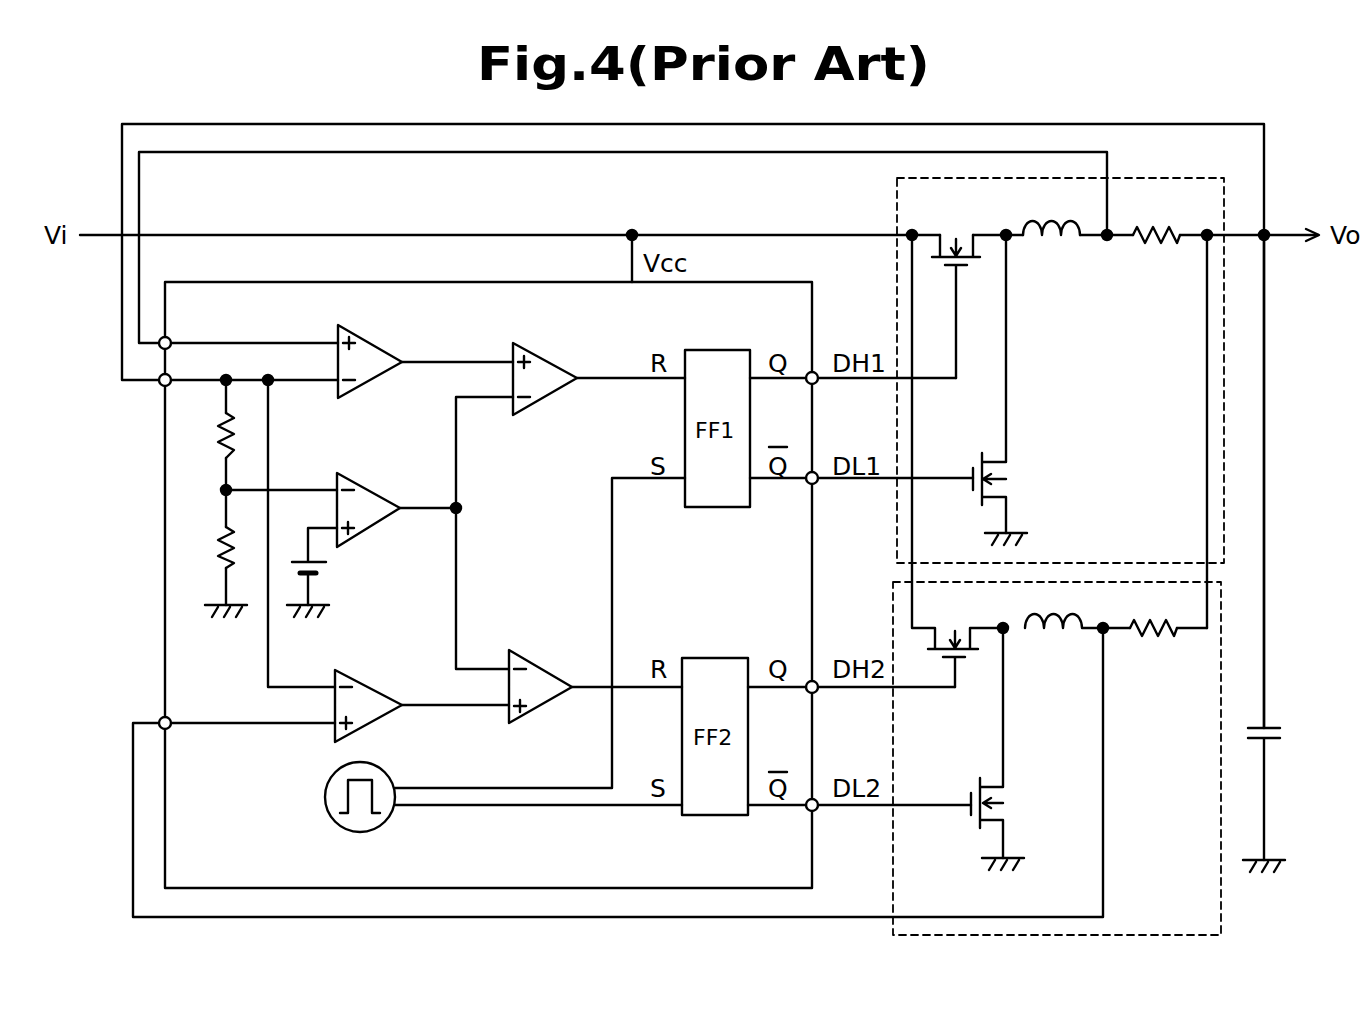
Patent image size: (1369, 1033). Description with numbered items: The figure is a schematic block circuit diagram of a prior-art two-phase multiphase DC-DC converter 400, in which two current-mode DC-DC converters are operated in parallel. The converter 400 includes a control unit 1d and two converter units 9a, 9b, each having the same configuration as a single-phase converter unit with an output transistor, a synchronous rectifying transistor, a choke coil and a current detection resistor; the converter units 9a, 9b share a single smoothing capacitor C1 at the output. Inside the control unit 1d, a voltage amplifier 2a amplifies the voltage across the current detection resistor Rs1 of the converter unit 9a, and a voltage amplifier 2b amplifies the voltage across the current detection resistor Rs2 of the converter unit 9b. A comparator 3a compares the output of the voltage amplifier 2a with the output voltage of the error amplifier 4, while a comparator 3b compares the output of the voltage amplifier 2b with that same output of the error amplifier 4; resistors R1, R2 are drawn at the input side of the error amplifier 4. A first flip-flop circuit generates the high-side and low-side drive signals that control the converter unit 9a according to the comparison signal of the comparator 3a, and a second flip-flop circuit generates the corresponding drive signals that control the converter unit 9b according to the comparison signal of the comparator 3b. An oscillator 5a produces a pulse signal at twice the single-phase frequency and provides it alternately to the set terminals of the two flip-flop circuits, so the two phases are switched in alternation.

The two-phase multiphase DC-DC converter 400 is at (1280, 105).
The control unit 1d is at (812, 858).
The voltage amplifier 2a is at (380, 346).
The voltage amplifier 2b is at (377, 691).
The comparator 3a is at (555, 363).
The comparator 3b is at (552, 672).
The error amplifier 4 is at (380, 493).
The oscillator 5a is at (385, 822).
The converter unit 9a is at (1157, 178).
The converter unit 9b is at (1221, 905).
The resistor R1 is at (222, 451).
The resistor R2 is at (222, 564).
The current detection resistor Rs1 is at (1152, 243).
The current detection resistor Rs2 is at (1149, 636).
The smoothing capacitor C1 is at (1266, 722).